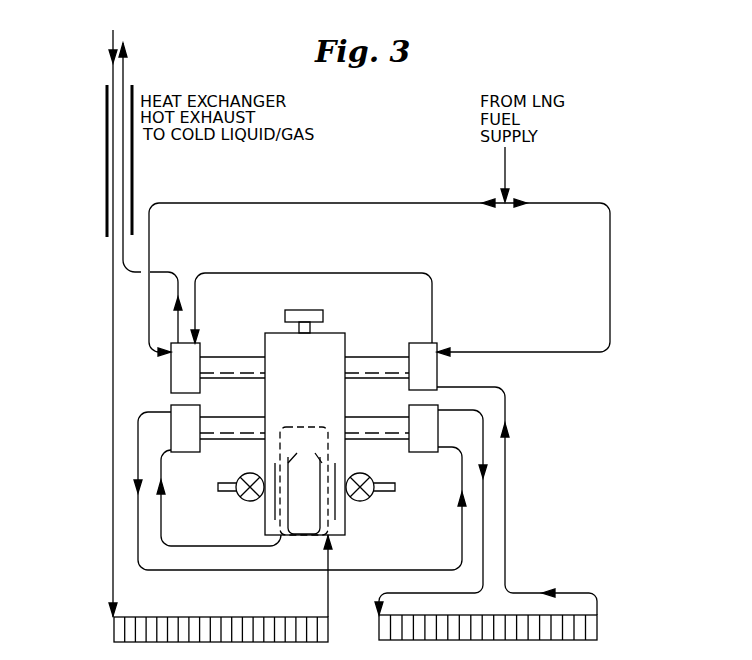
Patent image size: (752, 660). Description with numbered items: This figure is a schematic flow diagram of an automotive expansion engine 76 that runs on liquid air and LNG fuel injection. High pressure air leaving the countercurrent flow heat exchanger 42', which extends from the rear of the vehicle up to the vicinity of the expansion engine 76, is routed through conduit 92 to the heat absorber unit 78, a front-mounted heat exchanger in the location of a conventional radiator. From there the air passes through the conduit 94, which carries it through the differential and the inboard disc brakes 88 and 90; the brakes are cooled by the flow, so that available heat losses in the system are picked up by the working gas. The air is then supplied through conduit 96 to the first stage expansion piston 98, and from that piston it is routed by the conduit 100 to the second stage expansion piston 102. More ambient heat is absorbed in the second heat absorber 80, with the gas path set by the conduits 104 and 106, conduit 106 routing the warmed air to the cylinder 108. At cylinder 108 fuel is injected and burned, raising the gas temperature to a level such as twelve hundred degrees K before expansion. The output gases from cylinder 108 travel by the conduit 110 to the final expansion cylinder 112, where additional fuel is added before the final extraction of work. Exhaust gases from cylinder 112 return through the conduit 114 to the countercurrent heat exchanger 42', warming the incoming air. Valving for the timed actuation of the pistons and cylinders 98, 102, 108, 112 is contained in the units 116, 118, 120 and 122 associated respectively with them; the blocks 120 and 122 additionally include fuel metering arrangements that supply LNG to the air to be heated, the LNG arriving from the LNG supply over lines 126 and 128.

The heat exchanger 42' is at (93, 161).
The expansion engine 76 is at (447, 274).
The heat absorber unit 78 is at (114, 623).
The heat absorber 80 is at (597, 627).
The inboard disc brake 88 is at (242, 497).
The inboard disc brake 90 is at (368, 497).
The conduit 92 is at (113, 562).
The conduit 94 is at (327, 583).
The conduit 96 is at (162, 522).
The first stage expansion piston 98 is at (253, 440).
The conduit 100 is at (182, 570).
The second stage expansion piston 102 is at (360, 440).
The conduit 104 is at (383, 595).
The conduit 106 is at (578, 593).
The cylinder 108 is at (382, 355).
The conduit 110 is at (272, 273).
The final expansion cylinder 112 is at (284, 302).
The conduit 114 is at (123, 258).
The valving unit 116 is at (162, 400).
The valving unit 118 is at (403, 405).
The valving and fuel metering block 120 is at (437, 342).
The valving and fuel metering block 122 is at (200, 345).
The LNG line 126 is at (363, 202).
The LNG line 128 is at (612, 273).